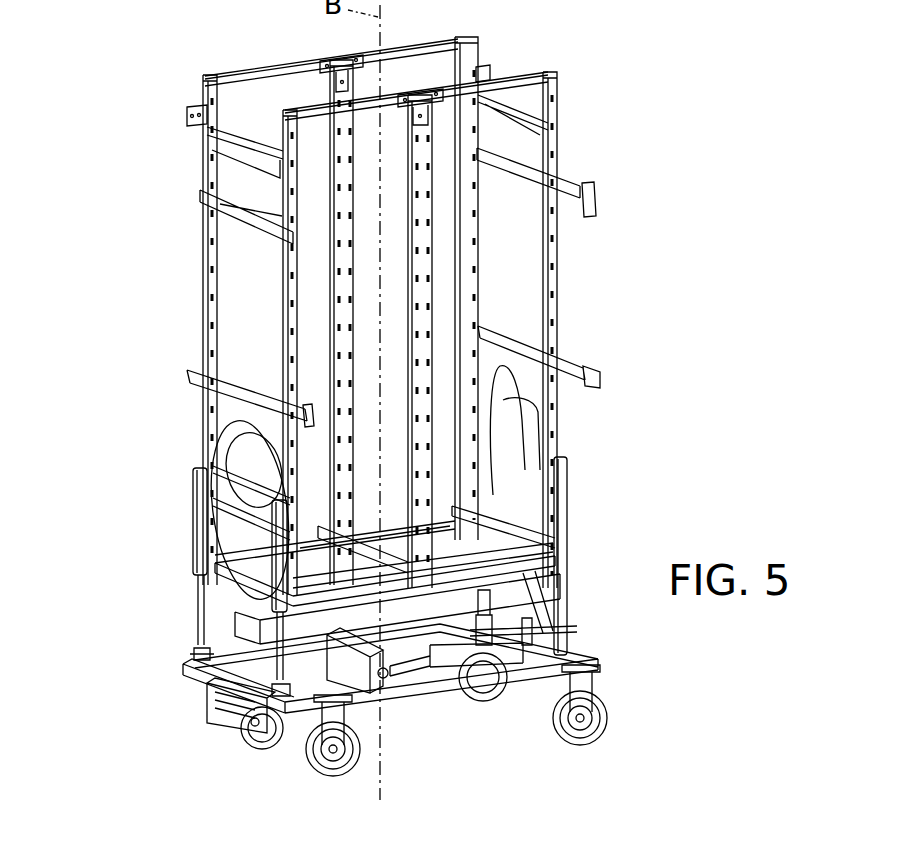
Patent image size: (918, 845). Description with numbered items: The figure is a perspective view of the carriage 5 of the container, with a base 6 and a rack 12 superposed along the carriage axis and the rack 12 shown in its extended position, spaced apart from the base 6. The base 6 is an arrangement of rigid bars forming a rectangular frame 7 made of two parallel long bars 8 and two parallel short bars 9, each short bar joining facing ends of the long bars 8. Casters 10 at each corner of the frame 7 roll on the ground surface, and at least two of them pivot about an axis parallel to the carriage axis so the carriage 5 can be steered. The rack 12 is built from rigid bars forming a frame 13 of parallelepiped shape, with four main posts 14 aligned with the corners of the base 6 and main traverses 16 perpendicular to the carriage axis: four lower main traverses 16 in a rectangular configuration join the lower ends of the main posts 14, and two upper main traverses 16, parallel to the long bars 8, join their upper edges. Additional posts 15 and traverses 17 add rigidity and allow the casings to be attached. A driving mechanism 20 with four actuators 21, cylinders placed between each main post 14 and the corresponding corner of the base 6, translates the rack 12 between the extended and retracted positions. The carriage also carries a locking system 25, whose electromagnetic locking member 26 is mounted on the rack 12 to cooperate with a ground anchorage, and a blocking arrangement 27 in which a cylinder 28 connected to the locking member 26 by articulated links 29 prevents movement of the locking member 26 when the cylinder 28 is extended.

The carriage 5 is at (722, 204).
The base 6 is at (630, 697).
The frame 7 is at (588, 660).
The long bars 8 is at (450, 696).
The short bars 9 is at (207, 681).
The casters 10 is at (310, 760).
The rack 12 is at (585, 143).
The frame 13 is at (197, 173).
The main posts 14 is at (283, 312).
The additional posts 15 is at (423, 130).
The main traverses 16 is at (323, 107).
The traverses 17 is at (243, 210).
The driving mechanism 20 is at (580, 587).
The actuators 21 is at (192, 542).
The locking system 25 is at (428, 616).
The locking member 26 is at (343, 662).
The blocking arrangement 27 is at (525, 633).
The cylinder 28 is at (484, 676).
The articulated links 29 is at (408, 665).